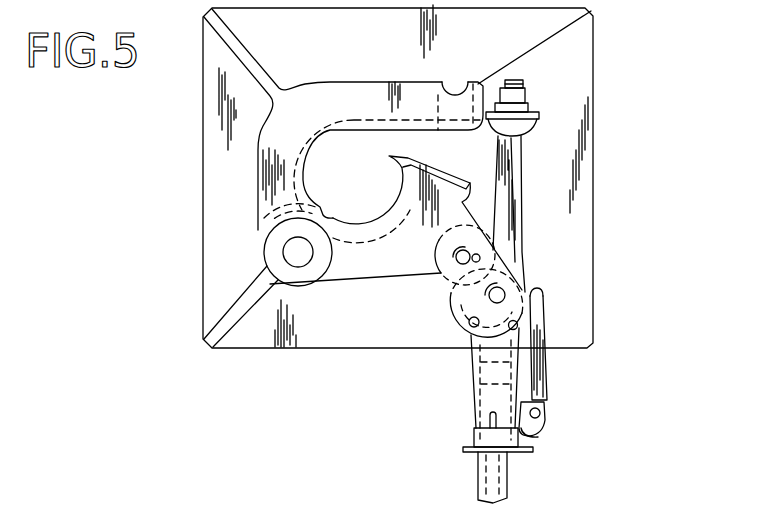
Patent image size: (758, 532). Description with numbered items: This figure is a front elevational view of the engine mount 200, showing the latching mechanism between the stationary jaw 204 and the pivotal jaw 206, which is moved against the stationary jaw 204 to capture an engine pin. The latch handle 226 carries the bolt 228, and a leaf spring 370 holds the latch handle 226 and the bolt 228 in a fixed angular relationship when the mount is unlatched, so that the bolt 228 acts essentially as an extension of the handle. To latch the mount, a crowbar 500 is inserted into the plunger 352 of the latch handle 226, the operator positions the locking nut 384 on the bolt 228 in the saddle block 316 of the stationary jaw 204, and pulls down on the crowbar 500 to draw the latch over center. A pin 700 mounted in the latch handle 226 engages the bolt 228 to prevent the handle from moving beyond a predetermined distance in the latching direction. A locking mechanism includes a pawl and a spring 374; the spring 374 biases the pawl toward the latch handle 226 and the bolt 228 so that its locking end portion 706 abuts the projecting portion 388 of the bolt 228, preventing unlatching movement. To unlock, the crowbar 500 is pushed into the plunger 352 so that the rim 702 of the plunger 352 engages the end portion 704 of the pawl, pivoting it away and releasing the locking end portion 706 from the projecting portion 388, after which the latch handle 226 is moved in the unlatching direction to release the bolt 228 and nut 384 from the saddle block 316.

The engine mount 200 is at (624, 120).
The stationary jaw 204 is at (372, 82).
The pivotal jaw 206 is at (371, 274).
The latch handle 226 is at (470, 352).
The bolt 228 is at (524, 153).
The saddle block 316 is at (462, 92).
The plunger 352 is at (463, 447).
The leaf spring 370 is at (452, 307).
The spring 374 is at (548, 400).
The locking nut 384 is at (531, 111).
The projecting portion 388 is at (536, 322).
The crowbar 500 is at (510, 472).
The pin 700 is at (471, 326).
The rim 702 is at (536, 450).
The end portion 704 is at (540, 434).
The locking end portion 706 is at (538, 290).